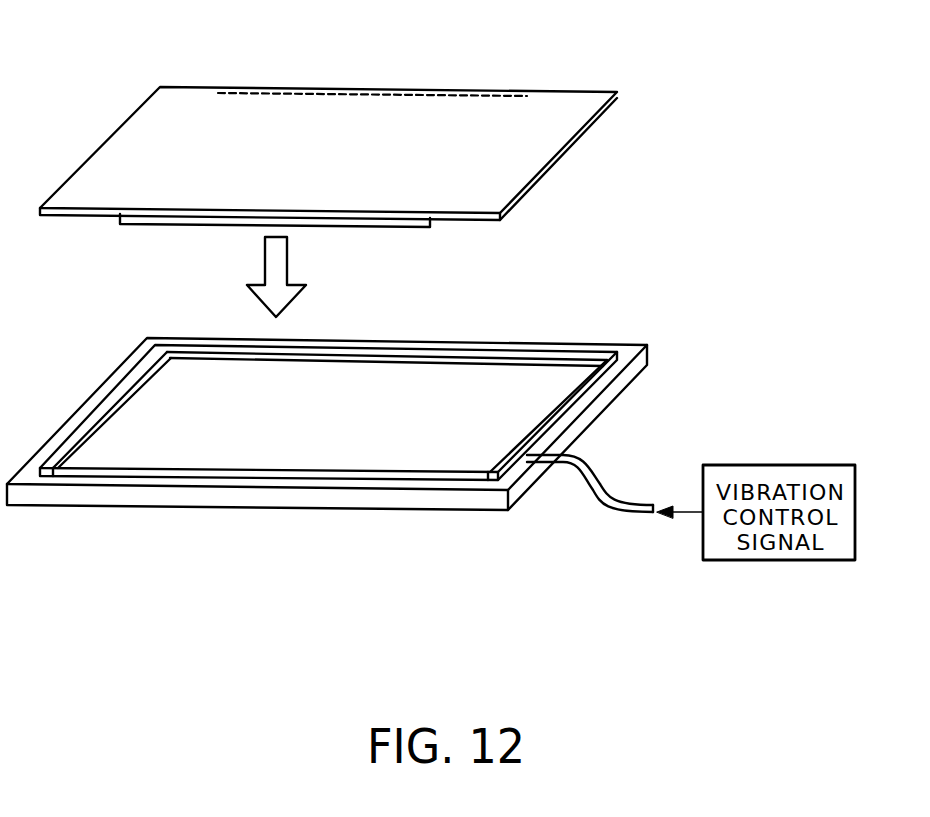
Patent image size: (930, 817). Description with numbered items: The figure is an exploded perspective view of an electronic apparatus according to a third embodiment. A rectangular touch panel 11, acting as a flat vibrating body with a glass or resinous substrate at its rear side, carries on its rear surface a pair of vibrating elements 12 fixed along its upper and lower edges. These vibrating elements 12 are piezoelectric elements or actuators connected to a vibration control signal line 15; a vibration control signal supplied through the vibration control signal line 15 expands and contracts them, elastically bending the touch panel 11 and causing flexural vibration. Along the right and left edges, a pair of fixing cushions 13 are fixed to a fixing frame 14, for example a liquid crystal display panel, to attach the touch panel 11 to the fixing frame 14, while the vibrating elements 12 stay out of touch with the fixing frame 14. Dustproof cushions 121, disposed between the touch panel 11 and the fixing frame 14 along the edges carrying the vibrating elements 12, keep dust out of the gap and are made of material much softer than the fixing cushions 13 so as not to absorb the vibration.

The touch panel 11 is at (555, 99).
The vibrating elements 12 is at (370, 86).
The dustproof cushions 121 is at (518, 352).
The fixing cushions 13 is at (600, 377).
The fixing frame 14 is at (600, 424).
The vibration control signal line 15 is at (610, 488).